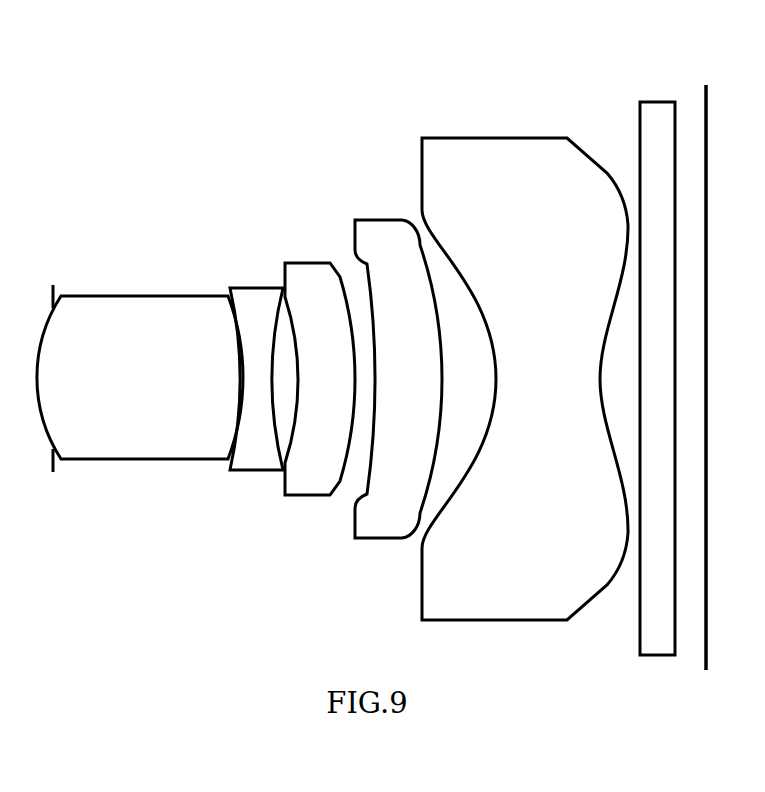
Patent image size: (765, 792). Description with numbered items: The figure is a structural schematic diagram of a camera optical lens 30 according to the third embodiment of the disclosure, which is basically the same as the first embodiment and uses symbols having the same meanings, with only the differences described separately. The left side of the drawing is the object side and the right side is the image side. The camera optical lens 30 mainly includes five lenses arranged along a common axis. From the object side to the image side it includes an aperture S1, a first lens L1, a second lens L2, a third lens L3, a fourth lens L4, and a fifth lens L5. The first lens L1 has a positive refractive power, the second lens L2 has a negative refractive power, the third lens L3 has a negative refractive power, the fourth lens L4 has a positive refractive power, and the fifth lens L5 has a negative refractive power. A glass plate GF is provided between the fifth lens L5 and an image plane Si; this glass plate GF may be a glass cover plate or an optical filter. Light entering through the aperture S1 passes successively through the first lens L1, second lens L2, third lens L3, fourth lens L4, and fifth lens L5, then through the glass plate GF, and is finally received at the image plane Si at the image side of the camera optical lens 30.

The camera optical lens 30 is at (353, 63).
The aperture S1 is at (50, 368).
The first lens L1 is at (140, 367).
The second lens L2 is at (256, 367).
The third lens L3 is at (320, 367).
The fourth lens L4 is at (398, 367).
The fifth lens L5 is at (525, 367).
The glass plate GF is at (657, 365).
The image plane Si is at (700, 365).